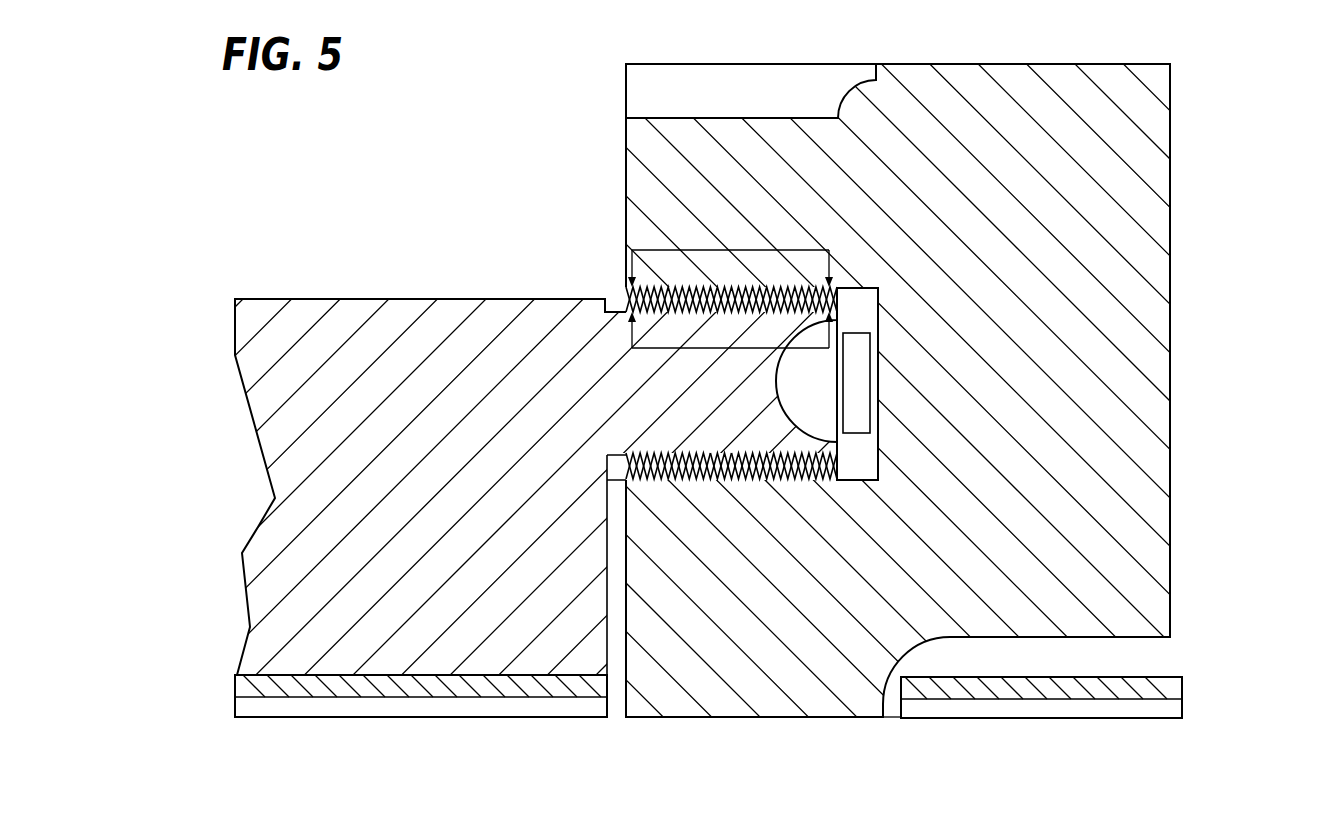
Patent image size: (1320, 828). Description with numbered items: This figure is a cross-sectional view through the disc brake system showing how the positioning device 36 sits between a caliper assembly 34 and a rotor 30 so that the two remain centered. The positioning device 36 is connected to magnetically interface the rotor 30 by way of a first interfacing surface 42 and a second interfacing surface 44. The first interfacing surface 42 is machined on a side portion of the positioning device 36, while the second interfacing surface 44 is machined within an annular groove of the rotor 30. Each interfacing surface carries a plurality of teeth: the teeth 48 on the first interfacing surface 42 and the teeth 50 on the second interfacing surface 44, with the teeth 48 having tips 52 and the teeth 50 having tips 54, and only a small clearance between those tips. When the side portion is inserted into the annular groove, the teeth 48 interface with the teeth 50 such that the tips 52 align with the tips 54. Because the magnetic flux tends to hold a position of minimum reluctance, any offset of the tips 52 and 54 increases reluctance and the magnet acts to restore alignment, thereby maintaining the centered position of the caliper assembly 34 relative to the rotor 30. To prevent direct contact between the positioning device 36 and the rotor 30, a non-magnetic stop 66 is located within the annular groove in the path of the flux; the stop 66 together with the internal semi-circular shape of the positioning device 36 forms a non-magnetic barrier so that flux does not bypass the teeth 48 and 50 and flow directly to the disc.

The rotor 30 is at (1125, 279).
The caliper assembly 34 is at (260, 688).
The positioning device 36 is at (320, 298).
The first interfacing surface 42 is at (633, 442).
The second interfacing surface 44 is at (797, 488).
The teeth 48 is at (632, 350).
The teeth 50 is at (655, 249).
The tips 52 is at (715, 454).
The tips 54 is at (755, 480).
The non-magnetic stop 66 is at (879, 340).